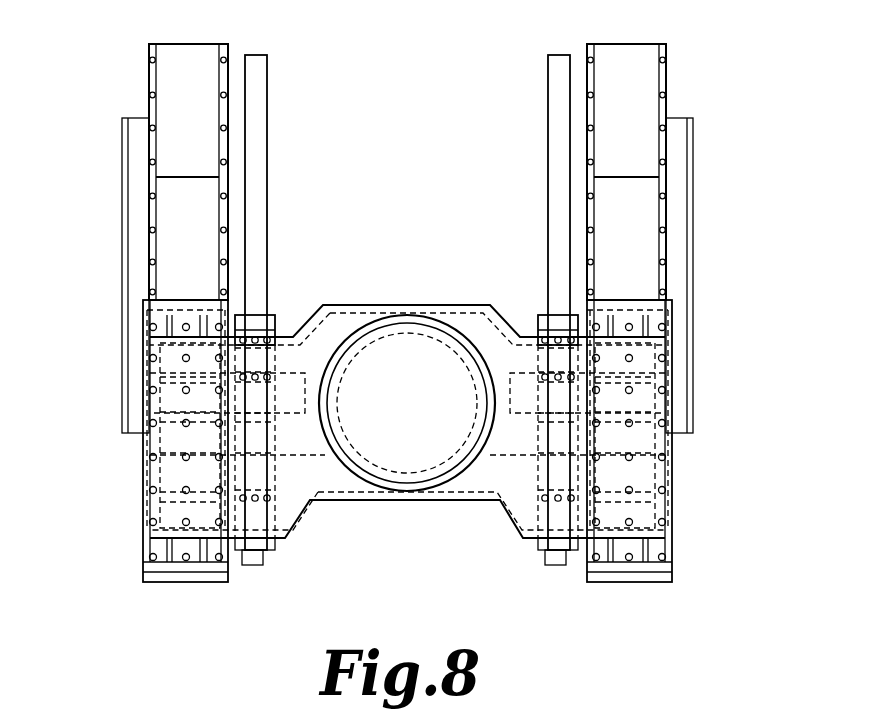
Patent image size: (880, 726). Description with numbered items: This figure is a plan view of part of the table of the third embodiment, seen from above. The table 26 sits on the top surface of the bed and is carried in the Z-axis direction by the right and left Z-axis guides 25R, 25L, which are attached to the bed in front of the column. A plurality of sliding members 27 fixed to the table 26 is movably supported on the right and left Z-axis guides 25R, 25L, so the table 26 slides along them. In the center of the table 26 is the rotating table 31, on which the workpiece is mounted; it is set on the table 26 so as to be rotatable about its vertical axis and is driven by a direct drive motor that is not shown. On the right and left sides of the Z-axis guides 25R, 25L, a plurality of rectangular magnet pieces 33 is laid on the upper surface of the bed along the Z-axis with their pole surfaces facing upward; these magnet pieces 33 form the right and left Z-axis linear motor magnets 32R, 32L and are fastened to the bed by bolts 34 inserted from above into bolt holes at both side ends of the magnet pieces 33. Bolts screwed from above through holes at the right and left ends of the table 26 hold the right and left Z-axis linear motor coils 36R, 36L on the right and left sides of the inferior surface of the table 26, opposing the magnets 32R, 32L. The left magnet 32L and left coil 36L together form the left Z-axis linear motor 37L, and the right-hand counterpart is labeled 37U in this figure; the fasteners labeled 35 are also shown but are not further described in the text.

The left Z-axis guide 25L is at (258, 135).
The right Z-axis guide 25R is at (553, 119).
The table 26 is at (315, 483).
The sliding member 27 is at (275, 318).
The rotating table 31 is at (423, 467).
The left Z-axis linear motor magnet 32L is at (140, 153).
The right Z-axis linear motor magnet 32R is at (679, 187).
The magnet piece 33 is at (170, 82).
The bolt 34 is at (220, 202).
The bolt 35 is at (220, 490).
The left Z-axis linear motor coil 36L is at (142, 545).
The right Z-axis linear motor coil 36R is at (668, 504).
The left mounting plate 37U is at (140, 455).
The left Z-axis linear motor 37L is at (682, 407).